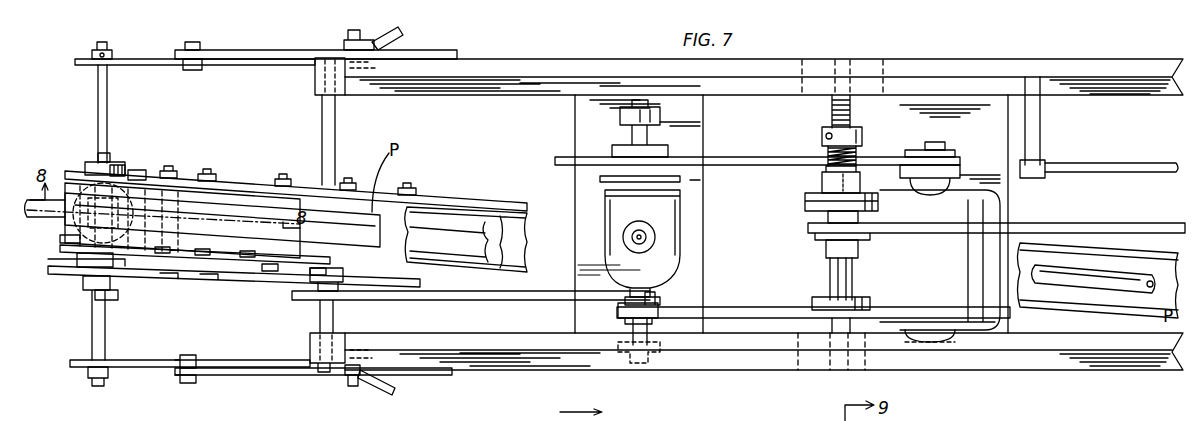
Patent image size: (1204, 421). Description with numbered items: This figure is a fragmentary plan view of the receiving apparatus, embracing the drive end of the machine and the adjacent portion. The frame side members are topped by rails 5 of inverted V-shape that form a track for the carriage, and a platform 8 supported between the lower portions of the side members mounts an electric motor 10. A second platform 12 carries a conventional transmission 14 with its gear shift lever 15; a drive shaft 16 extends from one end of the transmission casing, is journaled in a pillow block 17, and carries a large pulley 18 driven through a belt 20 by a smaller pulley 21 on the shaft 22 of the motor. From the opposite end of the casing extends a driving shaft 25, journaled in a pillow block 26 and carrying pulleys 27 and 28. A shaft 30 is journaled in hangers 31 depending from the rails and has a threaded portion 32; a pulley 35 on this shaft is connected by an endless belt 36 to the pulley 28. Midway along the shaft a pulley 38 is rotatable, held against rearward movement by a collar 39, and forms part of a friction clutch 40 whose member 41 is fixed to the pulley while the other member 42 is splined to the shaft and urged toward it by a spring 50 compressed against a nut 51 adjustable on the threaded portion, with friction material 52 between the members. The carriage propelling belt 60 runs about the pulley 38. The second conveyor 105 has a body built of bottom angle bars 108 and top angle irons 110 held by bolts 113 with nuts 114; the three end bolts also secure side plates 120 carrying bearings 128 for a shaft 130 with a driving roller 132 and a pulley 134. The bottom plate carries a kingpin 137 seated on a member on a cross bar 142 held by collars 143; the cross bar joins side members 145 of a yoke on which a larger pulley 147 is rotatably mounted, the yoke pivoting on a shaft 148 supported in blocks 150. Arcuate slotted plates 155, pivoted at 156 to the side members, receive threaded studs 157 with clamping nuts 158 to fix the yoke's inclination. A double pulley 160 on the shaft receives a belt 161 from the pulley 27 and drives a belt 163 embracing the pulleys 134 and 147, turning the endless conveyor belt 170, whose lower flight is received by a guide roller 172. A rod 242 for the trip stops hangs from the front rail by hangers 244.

The rail 5 is at (1043, 66).
The platform 8 is at (1012, 220).
The electric motor 10 is at (960, 333).
The second platform 12 is at (692, 205).
The transmission 14 is at (668, 232).
The gear shift lever 15 is at (636, 236).
The drive shaft 16 is at (632, 134).
The pillow block 17 is at (656, 116).
The pulley 18 is at (693, 156).
The belt 20 is at (772, 157).
The pulley 21 is at (957, 157).
The shaft 22 is at (937, 145).
The driving shaft 25 is at (628, 332).
The pillow block 26 is at (648, 360).
The pulley 27 is at (652, 293).
The pulley 28 is at (625, 318).
The shaft 30 is at (830, 266).
The hanger 31 is at (882, 66).
The threaded portion 32 is at (832, 105).
The pulley 35 is at (806, 305).
The endless belt 36 is at (741, 310).
The pulley 38 is at (812, 237).
The collar 39 is at (857, 254).
The friction clutch 40 is at (794, 203).
The clutch member 41 is at (808, 212).
The clutch member 42 is at (820, 186).
The spring 50 is at (856, 166).
The nut 51 is at (855, 127).
The friction material 52 is at (874, 200).
The carriage propelling belt 60 is at (1100, 228).
The second conveyor 105 is at (477, 195).
The angle bar 108 is at (505, 206).
The angle iron 110 is at (436, 206).
The bolt 113 is at (207, 175).
The nut 114 is at (284, 177).
The side plate 120 is at (244, 174).
The bearing 128 is at (86, 165).
The shaft 130 is at (108, 160).
The driving roller 132 is at (137, 180).
The pulley 134 is at (118, 284).
The kingpin 137 is at (66, 228).
The cross bar 142 is at (110, 98).
The collar 143 is at (122, 176).
The side member 145 is at (146, 58).
The pulley 147 is at (160, 256).
The shaft 148 is at (337, 148).
The block 150 is at (316, 82).
The arcuate slotted plate 155 is at (246, 50).
The pivot 156 is at (196, 42).
The threaded stud 157 is at (356, 30).
The clamping nut 158 is at (400, 24).
The double pulley 160 is at (344, 277).
The belt 161 is at (506, 302).
The belt 163 is at (222, 279).
The endless conveyor belt 170 is at (380, 218).
The guide roller 172 is at (186, 200).
The rod 242 is at (1140, 165).
The hanger 244 is at (1040, 136).